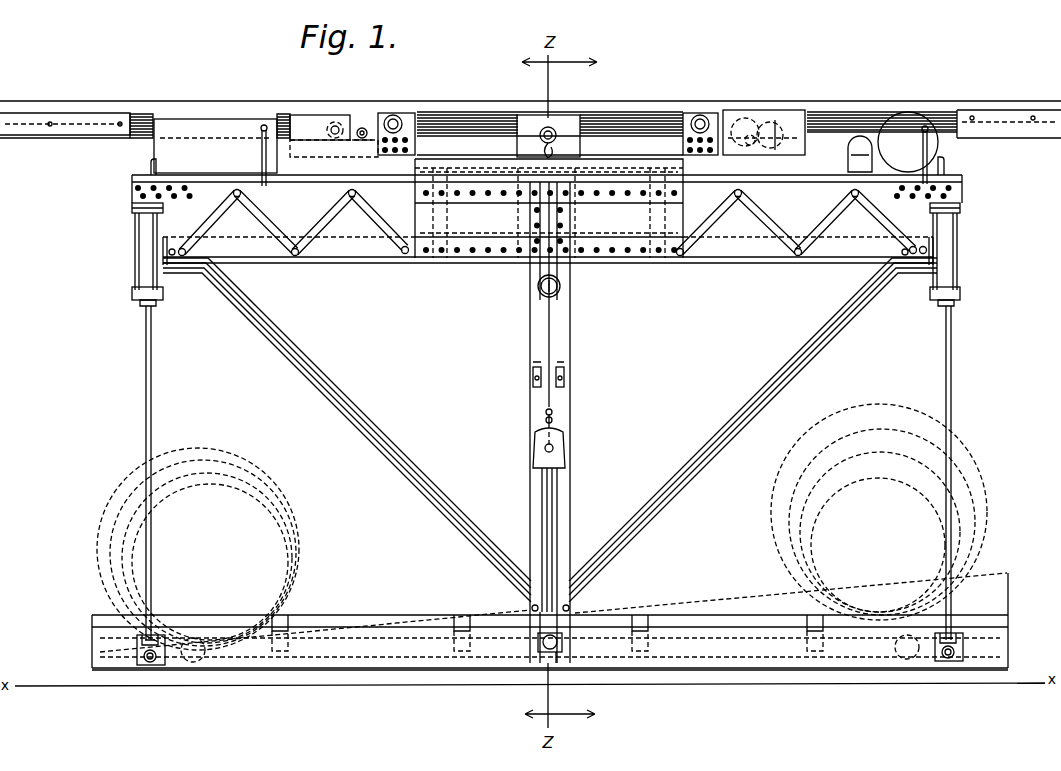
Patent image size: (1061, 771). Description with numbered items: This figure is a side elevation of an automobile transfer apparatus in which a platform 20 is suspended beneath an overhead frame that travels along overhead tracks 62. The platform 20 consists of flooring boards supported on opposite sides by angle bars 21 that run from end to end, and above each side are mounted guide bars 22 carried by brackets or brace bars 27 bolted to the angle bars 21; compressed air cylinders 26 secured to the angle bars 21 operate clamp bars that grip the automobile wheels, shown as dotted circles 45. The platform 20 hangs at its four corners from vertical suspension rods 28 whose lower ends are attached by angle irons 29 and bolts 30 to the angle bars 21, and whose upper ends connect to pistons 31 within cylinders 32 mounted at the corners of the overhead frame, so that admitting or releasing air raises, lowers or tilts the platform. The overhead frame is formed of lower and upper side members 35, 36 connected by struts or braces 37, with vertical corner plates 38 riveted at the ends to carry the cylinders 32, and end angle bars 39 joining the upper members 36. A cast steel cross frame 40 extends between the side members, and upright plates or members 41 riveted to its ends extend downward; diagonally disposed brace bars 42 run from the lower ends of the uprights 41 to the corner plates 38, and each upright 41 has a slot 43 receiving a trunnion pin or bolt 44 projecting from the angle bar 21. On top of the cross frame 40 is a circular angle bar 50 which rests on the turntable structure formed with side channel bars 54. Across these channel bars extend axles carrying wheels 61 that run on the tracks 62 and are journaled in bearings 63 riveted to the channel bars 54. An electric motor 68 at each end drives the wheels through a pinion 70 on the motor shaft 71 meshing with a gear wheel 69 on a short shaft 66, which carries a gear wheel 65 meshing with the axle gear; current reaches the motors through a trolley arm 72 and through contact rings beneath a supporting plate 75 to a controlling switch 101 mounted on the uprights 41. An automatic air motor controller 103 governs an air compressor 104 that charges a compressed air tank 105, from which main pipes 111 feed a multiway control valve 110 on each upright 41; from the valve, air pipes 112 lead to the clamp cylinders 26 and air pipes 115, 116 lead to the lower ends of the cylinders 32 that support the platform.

The platform 20 is at (758, 668).
The angle bars 21 is at (550, 642).
The guide bars 22 is at (345, 625).
The compressed air cylinders 26 is at (205, 662).
The brackets or brace bars 27 is at (285, 615).
The suspension rods 28 is at (152, 412).
The angle irons 29 is at (160, 665).
The bolts 30 is at (150, 663).
The pistons 31 is at (135, 270).
The cylinders 32 is at (140, 240).
The lower side members 35 is at (355, 258).
The upper side members 36 is at (312, 196).
The struts or braces 37 is at (325, 210).
The corner plates 38 is at (150, 212).
The angle bars 39 is at (151, 165).
The cross frame 40 is at (650, 167).
The upright plates or members 41 is at (563, 346).
The brace bars 42 is at (340, 418).
The slot 43 is at (540, 634).
The trunnion pin or bolt 44 is at (562, 657).
The automobile wheels 45 is at (292, 506).
The circular angle bar 50 is at (490, 160).
The side channel bars 54 is at (340, 150).
The carrying wheels 61 is at (398, 116).
The overhead tracks 62 is at (88, 113).
The bearings 63 is at (412, 115).
The gear wheel 65 is at (364, 128).
The short shaft 66 is at (752, 148).
The electric motor 68 is at (305, 116).
The gear wheel 69 is at (748, 118).
The pinion 70 is at (337, 122).
The motor shaft 71 is at (778, 150).
The trolley arm 72 is at (555, 128).
The supporting plate 75 is at (548, 115).
The controlling switch 101 is at (531, 373).
The automatic air motor controller 103 is at (852, 156).
The air compressor 104 is at (215, 146).
The compressed air tank 105 is at (908, 142).
The multiway control valve 110 is at (566, 458).
The main pipes 111 is at (546, 333).
The air pipes 112 is at (553, 505).
The air pipe 115 is at (541, 538).
The air pipe 116 is at (558, 542).